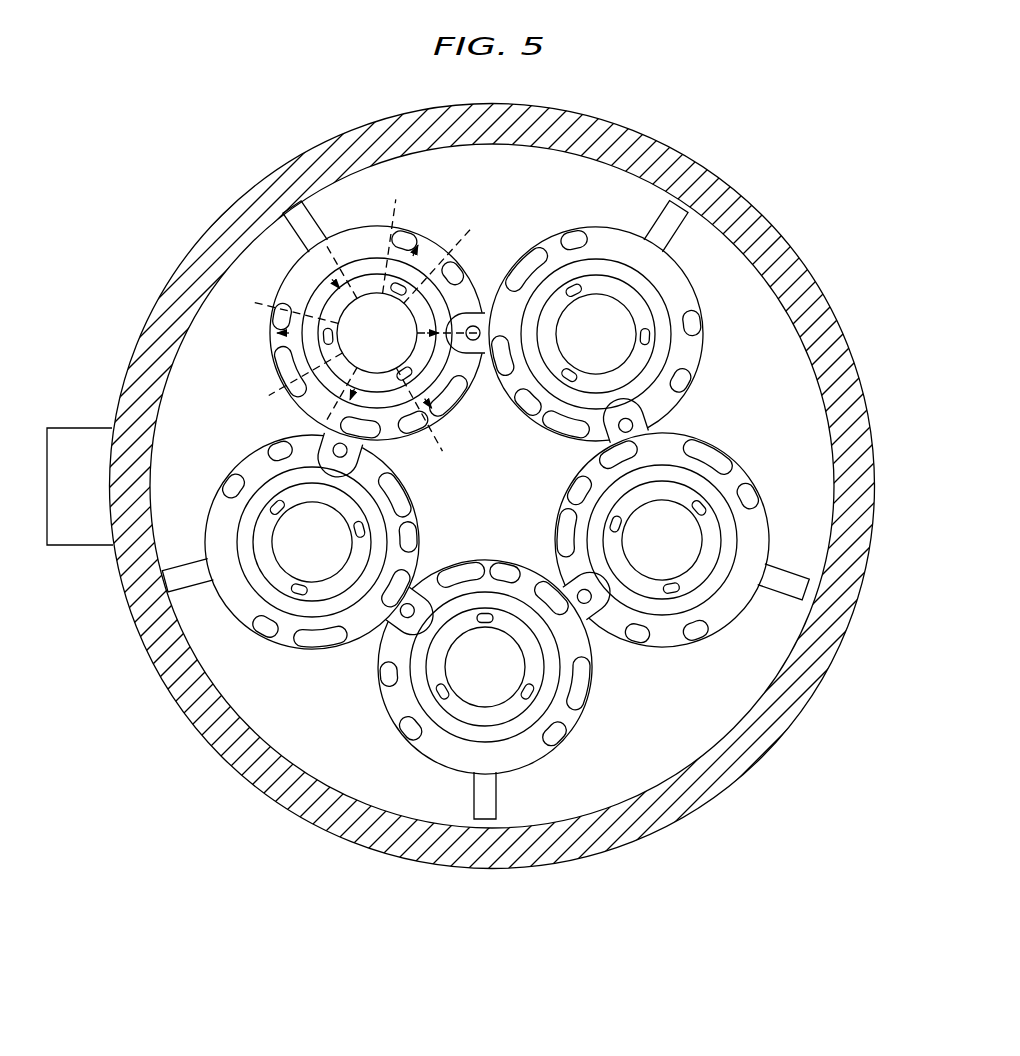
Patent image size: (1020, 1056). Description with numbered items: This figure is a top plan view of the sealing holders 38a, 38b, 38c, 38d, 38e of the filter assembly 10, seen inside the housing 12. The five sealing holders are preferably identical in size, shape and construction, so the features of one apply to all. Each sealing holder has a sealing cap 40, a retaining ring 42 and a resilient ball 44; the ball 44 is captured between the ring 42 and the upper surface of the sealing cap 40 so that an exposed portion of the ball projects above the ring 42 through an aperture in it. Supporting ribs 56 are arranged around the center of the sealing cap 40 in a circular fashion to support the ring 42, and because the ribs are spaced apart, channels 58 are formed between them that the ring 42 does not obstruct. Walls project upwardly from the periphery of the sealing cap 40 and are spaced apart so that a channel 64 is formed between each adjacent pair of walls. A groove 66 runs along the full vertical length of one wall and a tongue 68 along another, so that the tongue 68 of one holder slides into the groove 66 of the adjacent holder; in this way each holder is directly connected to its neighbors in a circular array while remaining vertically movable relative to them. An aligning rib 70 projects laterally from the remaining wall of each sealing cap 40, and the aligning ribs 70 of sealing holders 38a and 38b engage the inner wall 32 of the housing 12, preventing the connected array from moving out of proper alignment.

The filter assembly 10 is at (160, 157).
The housing 12 is at (788, 745).
The inner wall 32 is at (283, 755).
The sealing holder 38a is at (283, 260).
The sealing holder 38b is at (212, 620).
The sealing holder 38c is at (563, 768).
The sealing holder 38d is at (778, 468).
The sealing holder 38e is at (640, 225).
The sealing cap 40 is at (372, 220).
The retaining ring 42 is at (605, 272).
The resilient ball 44 is at (230, 340).
The supporting ribs 56 is at (353, 378).
The channels 58 is at (368, 295).
The channel 64 is at (428, 245).
The groove 66 is at (466, 312).
The tongue 68 is at (471, 343).
The aligning rib 70 is at (308, 238).